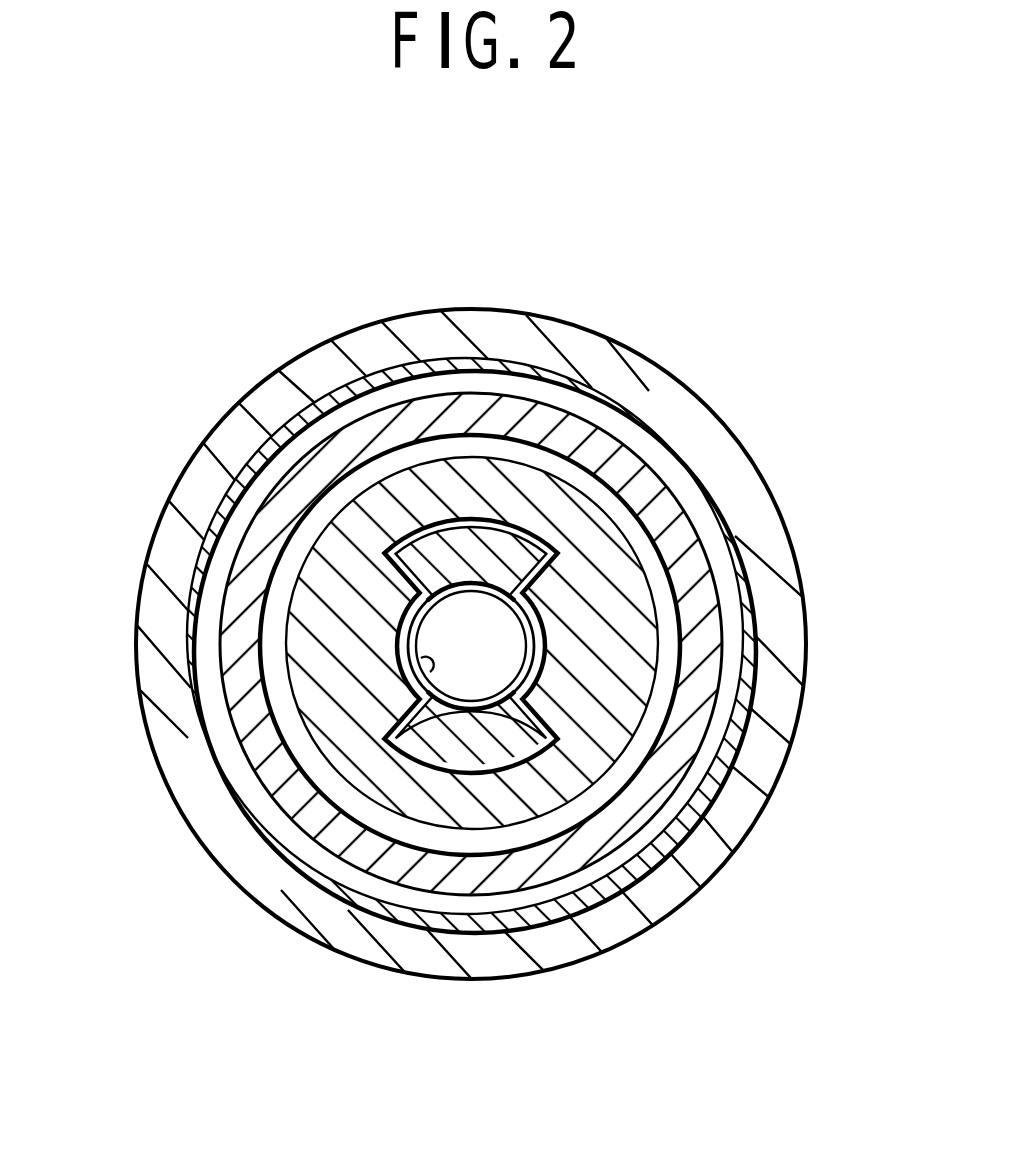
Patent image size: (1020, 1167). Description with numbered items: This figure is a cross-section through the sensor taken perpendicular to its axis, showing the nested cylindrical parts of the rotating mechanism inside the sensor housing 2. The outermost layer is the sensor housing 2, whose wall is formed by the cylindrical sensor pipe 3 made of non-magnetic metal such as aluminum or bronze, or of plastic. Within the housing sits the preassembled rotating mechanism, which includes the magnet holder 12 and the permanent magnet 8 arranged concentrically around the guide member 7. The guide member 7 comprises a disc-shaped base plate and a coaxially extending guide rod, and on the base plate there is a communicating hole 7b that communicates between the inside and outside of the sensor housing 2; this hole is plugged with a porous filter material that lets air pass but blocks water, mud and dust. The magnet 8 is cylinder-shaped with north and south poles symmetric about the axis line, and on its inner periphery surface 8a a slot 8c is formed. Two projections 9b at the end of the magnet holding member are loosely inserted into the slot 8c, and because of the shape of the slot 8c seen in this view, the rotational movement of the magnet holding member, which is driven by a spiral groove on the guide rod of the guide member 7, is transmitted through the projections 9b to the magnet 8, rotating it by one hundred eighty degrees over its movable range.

The sensor housing 2 is at (519, 644).
The sensor pipe 3 is at (533, 645).
The guide member 7 is at (607, 550).
The communicating hole 7b is at (295, 606).
The permanent magnet 8 is at (548, 672).
The inner periphery surface 8a is at (242, 709).
The slot 8c is at (470, 648).
The projections 9b is at (519, 656).
The magnet holder 12 is at (480, 692).